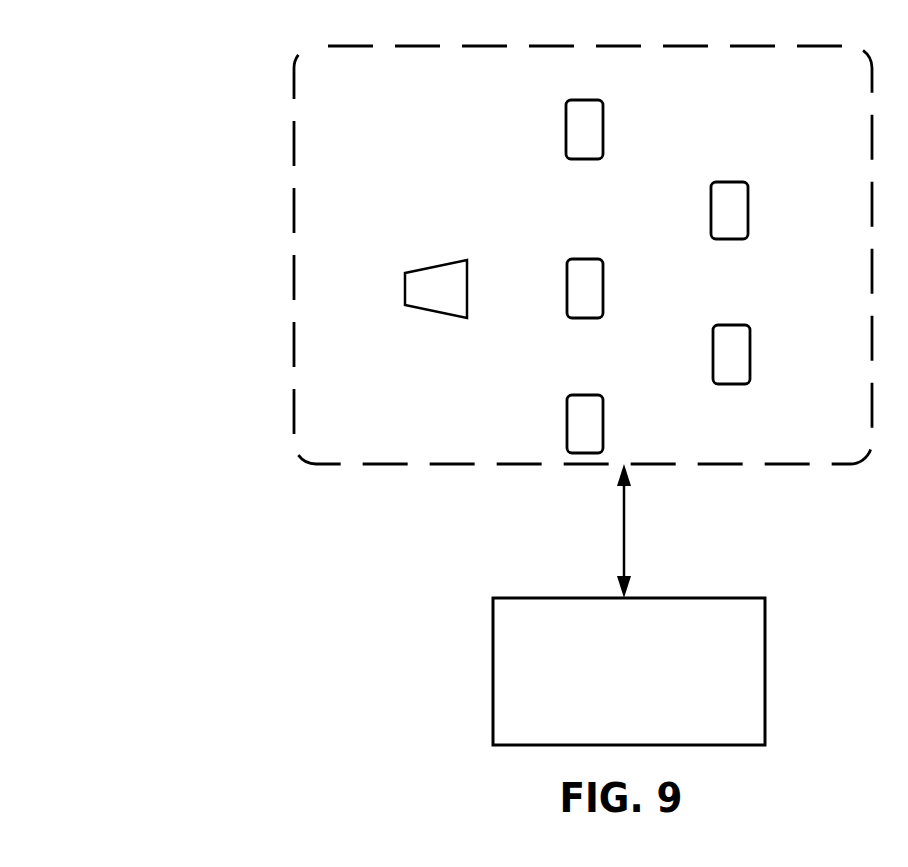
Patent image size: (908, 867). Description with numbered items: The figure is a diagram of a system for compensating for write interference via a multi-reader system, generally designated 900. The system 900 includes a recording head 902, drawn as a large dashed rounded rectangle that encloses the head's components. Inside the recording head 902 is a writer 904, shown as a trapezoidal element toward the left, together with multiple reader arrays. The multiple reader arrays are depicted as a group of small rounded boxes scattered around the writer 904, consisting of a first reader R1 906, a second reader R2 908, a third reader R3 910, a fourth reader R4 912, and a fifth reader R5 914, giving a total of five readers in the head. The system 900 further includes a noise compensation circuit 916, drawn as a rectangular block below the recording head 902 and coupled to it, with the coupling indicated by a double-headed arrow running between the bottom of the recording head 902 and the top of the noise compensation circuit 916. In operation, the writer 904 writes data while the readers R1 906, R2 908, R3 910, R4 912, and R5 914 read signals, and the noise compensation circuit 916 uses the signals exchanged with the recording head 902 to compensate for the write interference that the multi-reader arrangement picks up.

The system for compensating for write interference via a multi-reader system 900 is at (132, 55).
The recording head 902 is at (314, 122).
The writer 904 is at (445, 272).
The first reader R1 906 is at (727, 337).
The second reader R2 908 is at (580, 408).
The third reader R3 910 is at (575, 273).
The fourth reader R4 912 is at (720, 195).
The fifth reader R5 914 is at (575, 115).
The noise compensation circuit 916 is at (506, 614).